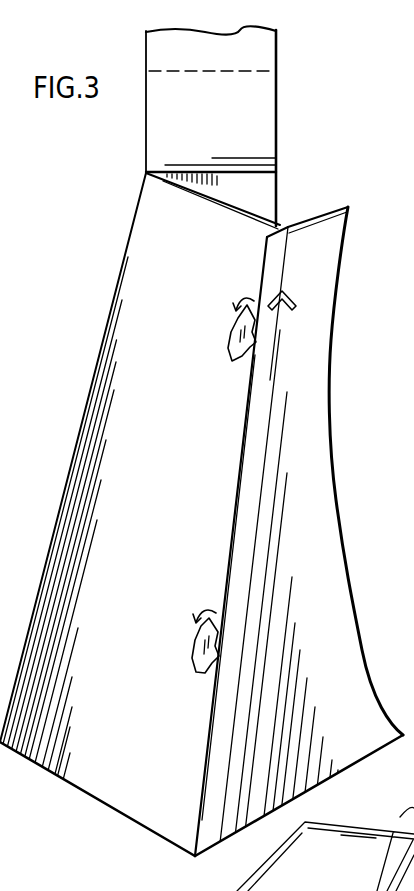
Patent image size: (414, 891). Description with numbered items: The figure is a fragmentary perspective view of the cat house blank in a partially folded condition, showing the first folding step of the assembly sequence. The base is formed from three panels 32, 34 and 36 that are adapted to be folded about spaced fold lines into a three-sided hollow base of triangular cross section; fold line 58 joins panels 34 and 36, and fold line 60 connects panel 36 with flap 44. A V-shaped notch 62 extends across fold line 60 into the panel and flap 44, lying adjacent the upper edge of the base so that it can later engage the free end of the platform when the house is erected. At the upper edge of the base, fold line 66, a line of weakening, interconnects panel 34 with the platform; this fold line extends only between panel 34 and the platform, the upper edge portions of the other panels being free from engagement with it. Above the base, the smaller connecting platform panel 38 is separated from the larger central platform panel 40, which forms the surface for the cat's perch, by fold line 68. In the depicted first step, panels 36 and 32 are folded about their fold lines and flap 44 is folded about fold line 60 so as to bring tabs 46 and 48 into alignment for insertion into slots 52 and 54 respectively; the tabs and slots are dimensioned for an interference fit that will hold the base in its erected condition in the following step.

The panel 32 is at (313, 390).
The panel 34 is at (246, 236).
The panel 36 is at (219, 184).
The platform panel 38 is at (255, 118).
The platform panel 40 is at (255, 53).
The flap 44 is at (250, 447).
The tab 46 is at (228, 338).
The tab 48 is at (195, 650).
The slot 52 is at (246, 303).
The slot 54 is at (200, 674).
The fold line 58 is at (96, 370).
The fold line 60 is at (258, 522).
The V-shaped notch 62 is at (297, 300).
The fold line 66 is at (262, 158).
The fold line 68 is at (265, 74).